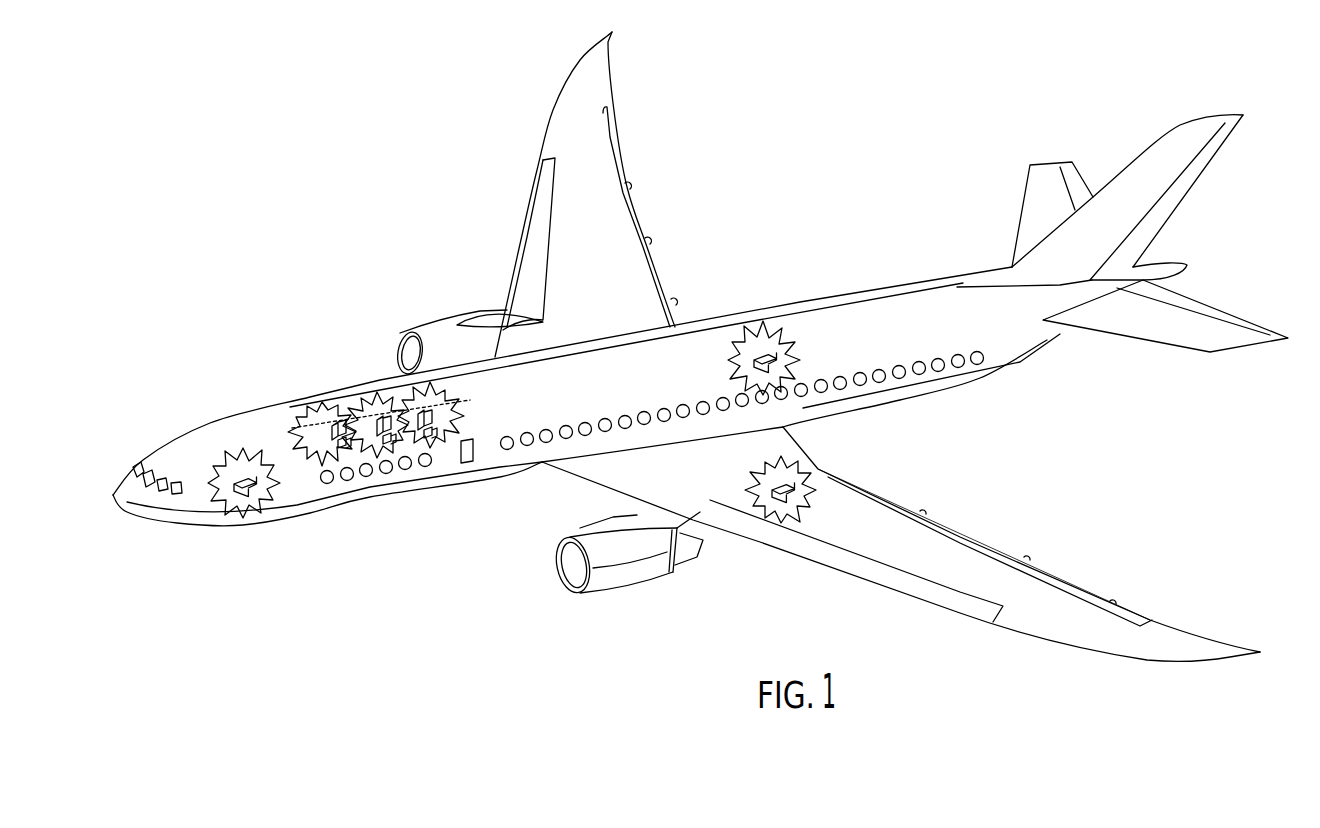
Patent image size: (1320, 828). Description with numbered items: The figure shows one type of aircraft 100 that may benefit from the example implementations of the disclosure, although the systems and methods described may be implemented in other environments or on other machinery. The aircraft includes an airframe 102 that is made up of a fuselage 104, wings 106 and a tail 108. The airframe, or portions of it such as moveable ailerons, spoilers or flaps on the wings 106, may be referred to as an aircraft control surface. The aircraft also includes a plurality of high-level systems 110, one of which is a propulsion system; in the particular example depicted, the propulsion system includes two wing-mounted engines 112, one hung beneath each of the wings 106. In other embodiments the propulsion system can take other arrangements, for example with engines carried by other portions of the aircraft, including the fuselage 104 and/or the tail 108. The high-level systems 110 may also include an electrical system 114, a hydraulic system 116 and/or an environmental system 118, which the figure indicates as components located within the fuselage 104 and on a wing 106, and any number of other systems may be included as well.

The aircraft 100 is at (354, 228).
The airframe 102 is at (364, 368).
The fuselage 104 is at (398, 505).
The wings 106 is at (545, 130).
The tail 108 is at (955, 208).
The high-level systems 110 is at (1135, 493).
The wing-mounted engines 112 is at (448, 325).
The electrical system 114 is at (250, 468).
The hydraulic system 116 is at (800, 462).
The environmental system 118 is at (765, 345).